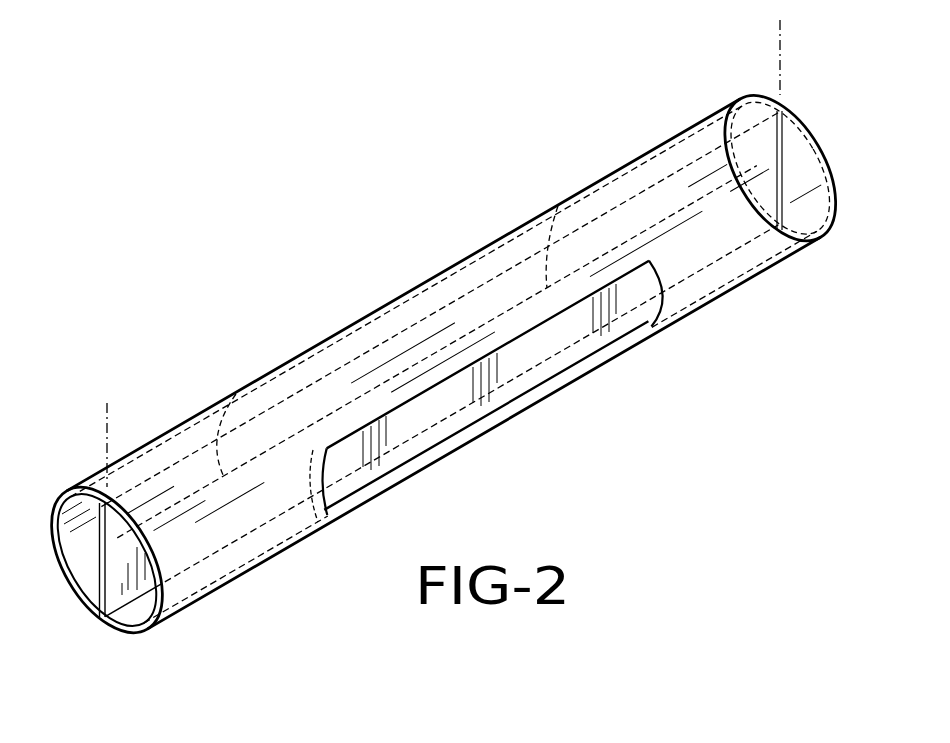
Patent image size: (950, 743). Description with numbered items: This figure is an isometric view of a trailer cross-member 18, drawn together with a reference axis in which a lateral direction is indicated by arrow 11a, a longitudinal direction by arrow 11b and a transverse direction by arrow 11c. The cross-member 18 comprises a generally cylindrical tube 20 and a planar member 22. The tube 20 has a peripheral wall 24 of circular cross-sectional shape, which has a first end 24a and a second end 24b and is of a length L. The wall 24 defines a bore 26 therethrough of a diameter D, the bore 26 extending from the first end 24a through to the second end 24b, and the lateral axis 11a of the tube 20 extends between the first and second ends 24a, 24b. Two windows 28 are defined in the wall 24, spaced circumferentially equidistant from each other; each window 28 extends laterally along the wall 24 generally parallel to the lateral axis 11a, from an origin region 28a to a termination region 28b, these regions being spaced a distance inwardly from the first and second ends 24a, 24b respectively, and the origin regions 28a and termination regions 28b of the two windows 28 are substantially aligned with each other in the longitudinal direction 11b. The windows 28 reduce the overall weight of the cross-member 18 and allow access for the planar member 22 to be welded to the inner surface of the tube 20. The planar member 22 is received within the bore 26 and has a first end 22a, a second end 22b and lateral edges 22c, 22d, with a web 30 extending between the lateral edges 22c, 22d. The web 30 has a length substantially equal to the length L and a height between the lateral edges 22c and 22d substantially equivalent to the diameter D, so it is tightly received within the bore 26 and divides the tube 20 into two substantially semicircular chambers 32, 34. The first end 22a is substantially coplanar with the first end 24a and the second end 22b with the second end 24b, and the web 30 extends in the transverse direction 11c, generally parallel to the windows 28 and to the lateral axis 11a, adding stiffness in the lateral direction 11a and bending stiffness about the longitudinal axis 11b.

The cross-member 18 is at (337, 322).
The tube 20 is at (283, 362).
The planar member 22 is at (449, 369).
The first end 22a is at (100, 582).
The second end 22b is at (784, 154).
The lateral edge 22c is at (411, 322).
The lateral edge 22d is at (527, 373).
The peripheral wall 24 is at (632, 176).
The first end 24a is at (147, 631).
The second end 24b is at (835, 243).
The bore 26 is at (83, 528).
The window 28 is at (457, 394).
The origin region 28a is at (333, 518).
The termination region 28b is at (666, 320).
The web 30 is at (411, 420).
The semicircular chamber 32 is at (80, 568).
The semicircular chamber 34 is at (125, 568).
The length L is at (777, 27).
The diameter D is at (147, 457).
The lateral direction 11a is at (663, 497).
The longitudinal direction 11b is at (663, 497).
The transverse direction 11c is at (663, 497).